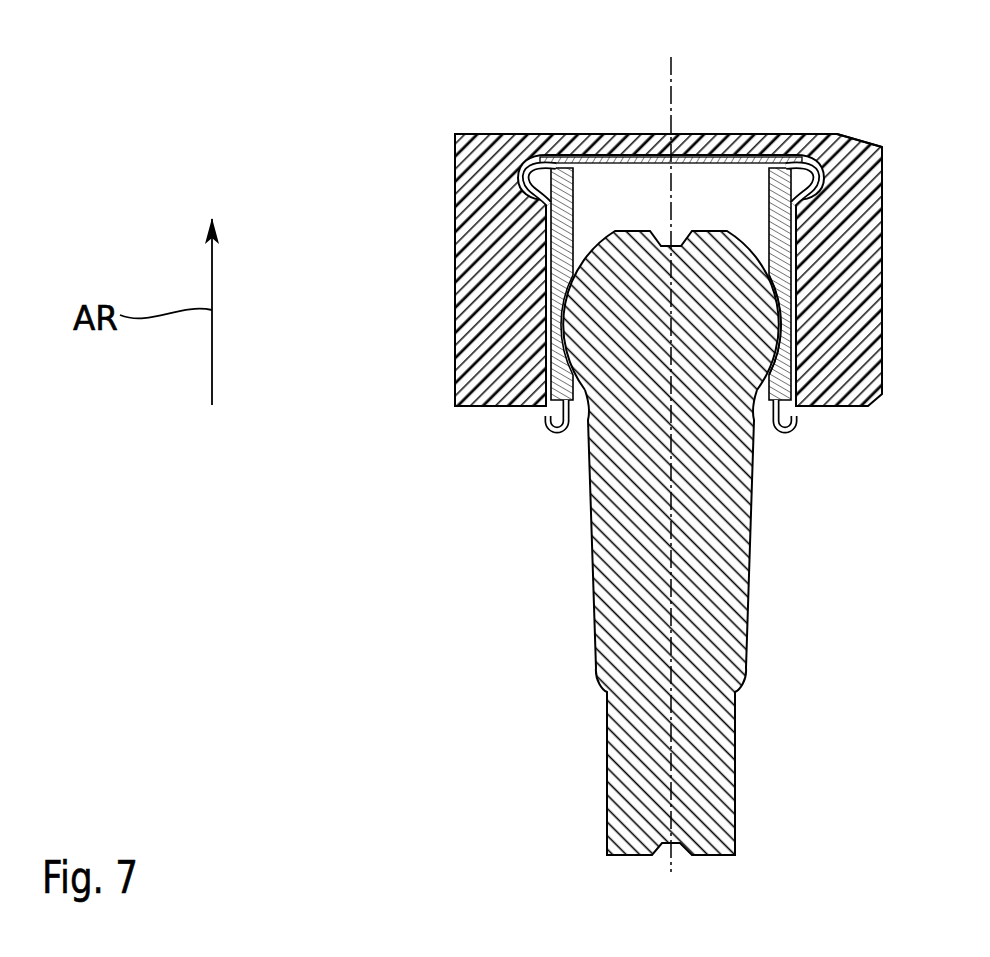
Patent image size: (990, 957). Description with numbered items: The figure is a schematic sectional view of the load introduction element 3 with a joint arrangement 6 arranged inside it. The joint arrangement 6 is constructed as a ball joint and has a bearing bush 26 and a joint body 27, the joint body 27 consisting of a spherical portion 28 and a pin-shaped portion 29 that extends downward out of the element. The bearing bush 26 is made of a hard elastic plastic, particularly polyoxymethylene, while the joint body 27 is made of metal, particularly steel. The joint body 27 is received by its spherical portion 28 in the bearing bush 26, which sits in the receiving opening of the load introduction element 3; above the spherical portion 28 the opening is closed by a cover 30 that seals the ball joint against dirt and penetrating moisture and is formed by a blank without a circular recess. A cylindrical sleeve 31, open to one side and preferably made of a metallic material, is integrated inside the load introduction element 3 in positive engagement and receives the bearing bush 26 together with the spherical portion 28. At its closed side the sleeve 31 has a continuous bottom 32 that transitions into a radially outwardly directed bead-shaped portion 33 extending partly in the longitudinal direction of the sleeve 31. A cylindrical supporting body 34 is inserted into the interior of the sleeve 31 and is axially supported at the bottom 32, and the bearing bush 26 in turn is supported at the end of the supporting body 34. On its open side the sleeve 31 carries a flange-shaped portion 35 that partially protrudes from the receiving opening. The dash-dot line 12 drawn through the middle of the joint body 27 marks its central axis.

The load introduction element 3 is at (624, 234).
The joint arrangement 6 is at (710, 543).
The longitudinal axis 12 is at (668, 92).
The bearing bush 26 is at (790, 289).
The joint body 27 is at (579, 546).
The spherical portion 28 is at (788, 333).
The pin-shaped portion 29 is at (584, 497).
The cover 30 is at (714, 134).
The cylindrical sleeve 31 is at (531, 424).
The bottom 32 is at (762, 134).
The bead-shaped portion 33 is at (832, 134).
The supporting body 34 is at (744, 282).
The flange-shaped portion 35 is at (790, 420).